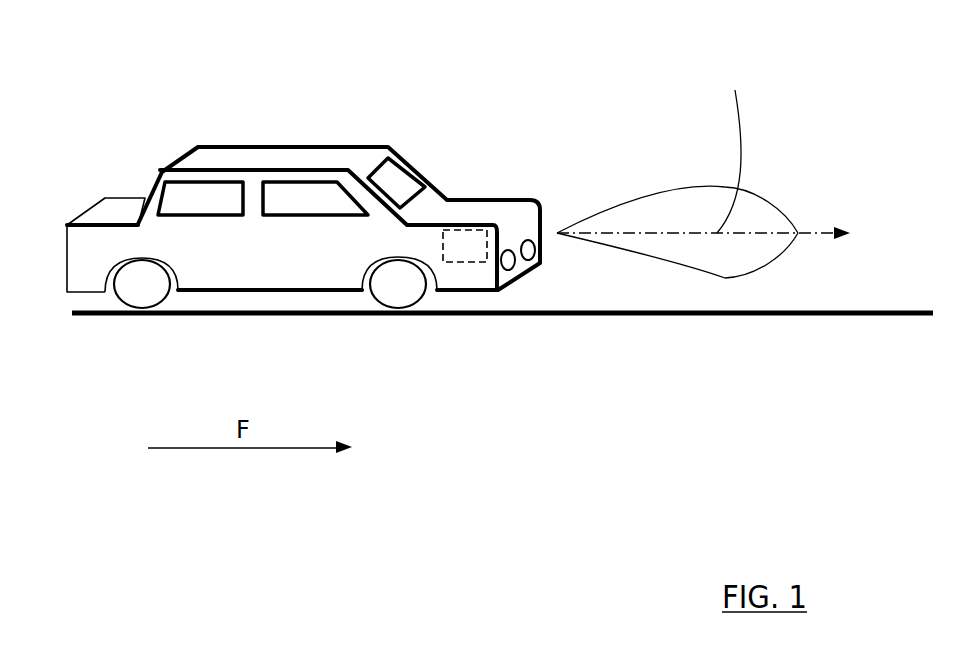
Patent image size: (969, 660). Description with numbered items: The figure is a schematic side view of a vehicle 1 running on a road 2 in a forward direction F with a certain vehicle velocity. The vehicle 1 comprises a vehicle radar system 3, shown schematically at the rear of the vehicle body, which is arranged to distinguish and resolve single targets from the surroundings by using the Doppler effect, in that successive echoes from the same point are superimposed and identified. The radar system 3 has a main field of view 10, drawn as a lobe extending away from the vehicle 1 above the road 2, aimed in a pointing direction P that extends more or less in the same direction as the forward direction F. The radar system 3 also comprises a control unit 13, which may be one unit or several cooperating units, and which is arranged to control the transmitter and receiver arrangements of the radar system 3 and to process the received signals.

The vehicle 1 is at (360, 87).
The road 2 is at (603, 317).
The vehicle radar system 3 is at (473, 227).
The main field of view 10 is at (763, 193).
The control unit 13 is at (598, 370).